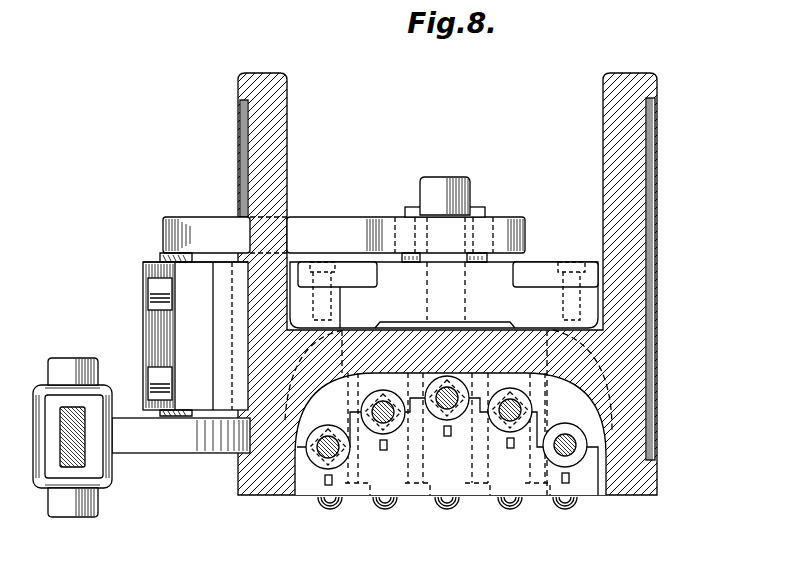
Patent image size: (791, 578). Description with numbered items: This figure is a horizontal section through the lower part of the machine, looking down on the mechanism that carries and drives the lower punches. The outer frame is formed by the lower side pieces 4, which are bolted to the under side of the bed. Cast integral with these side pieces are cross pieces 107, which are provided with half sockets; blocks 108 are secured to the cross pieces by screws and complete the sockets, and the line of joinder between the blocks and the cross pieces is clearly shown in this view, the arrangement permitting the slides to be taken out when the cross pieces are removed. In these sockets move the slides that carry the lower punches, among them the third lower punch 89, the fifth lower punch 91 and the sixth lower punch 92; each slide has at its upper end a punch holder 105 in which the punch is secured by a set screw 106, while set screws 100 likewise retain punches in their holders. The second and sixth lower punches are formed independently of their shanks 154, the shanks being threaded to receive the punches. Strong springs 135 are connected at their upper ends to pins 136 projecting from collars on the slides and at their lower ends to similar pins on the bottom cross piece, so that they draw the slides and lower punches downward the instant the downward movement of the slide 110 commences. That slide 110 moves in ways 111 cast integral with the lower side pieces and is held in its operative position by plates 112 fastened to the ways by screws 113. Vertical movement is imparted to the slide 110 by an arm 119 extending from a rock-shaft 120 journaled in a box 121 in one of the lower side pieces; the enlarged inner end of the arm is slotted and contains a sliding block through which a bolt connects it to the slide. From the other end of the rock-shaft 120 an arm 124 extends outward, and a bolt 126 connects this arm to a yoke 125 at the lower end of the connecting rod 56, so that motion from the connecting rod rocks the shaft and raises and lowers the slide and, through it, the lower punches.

The lower side pieces 4 is at (255, 128).
The connecting rod 56 is at (60, 455).
The third lower punch 89 is at (502, 422).
The fifth lower punch 91 is at (397, 420).
The sixth lower punch 92 is at (452, 400).
The set screws 100 is at (478, 490).
The punch holders 105 is at (320, 430).
The set screws 106 is at (575, 482).
The cross pieces 107 is at (572, 394).
The blocks 108 is at (373, 505).
The slide 110 is at (533, 285).
The ways 111 is at (342, 303).
The plates 112 is at (533, 268).
The screws 113 is at (573, 262).
The arm 119 is at (318, 230).
The rock-shaft 120 is at (197, 275).
The box 121 is at (190, 335).
The arm 124 is at (181, 435).
The yoke 125 is at (110, 467).
The bolt 126 is at (78, 360).
The springs 135 is at (318, 513).
The pins 136 is at (333, 518).
The shanks 154 is at (320, 458).